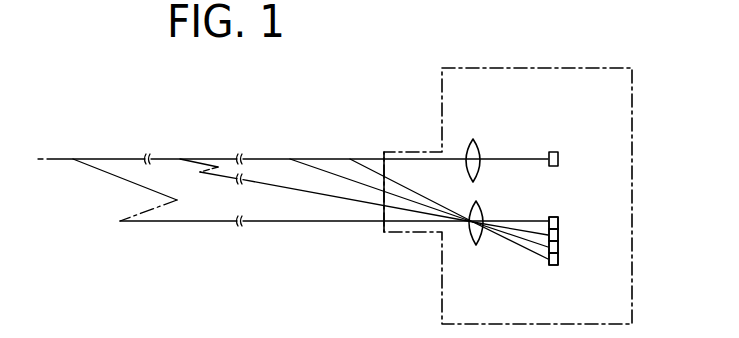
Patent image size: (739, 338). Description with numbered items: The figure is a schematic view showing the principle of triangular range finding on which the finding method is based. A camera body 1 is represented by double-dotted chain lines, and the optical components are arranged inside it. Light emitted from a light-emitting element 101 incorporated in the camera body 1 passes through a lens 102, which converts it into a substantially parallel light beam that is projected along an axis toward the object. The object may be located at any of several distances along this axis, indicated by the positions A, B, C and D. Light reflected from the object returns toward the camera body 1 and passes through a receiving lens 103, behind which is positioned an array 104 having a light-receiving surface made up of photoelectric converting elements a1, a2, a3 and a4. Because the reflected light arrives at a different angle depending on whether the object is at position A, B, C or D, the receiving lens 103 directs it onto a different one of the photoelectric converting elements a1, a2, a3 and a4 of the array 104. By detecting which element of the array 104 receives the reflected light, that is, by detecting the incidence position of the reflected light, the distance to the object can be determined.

The camera body 1 is at (633, 82).
The light-emitting element 101 is at (559, 159).
The lens 102 is at (472, 136).
The receiving lens 103 is at (476, 247).
The array 104 is at (548, 267).
The photoelectric converting element a1 is at (559, 222).
The photoelectric converting element a2 is at (559, 234).
The photoelectric converting element a3 is at (559, 246).
The photoelectric converting element a4 is at (559, 257).
The object position A is at (121, 177).
The object position B is at (359, 184).
The object position C is at (413, 190).
The object position D is at (443, 196).